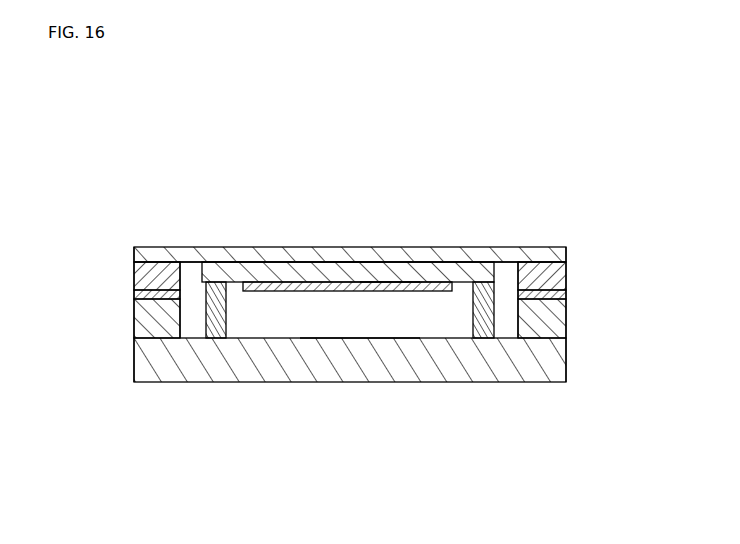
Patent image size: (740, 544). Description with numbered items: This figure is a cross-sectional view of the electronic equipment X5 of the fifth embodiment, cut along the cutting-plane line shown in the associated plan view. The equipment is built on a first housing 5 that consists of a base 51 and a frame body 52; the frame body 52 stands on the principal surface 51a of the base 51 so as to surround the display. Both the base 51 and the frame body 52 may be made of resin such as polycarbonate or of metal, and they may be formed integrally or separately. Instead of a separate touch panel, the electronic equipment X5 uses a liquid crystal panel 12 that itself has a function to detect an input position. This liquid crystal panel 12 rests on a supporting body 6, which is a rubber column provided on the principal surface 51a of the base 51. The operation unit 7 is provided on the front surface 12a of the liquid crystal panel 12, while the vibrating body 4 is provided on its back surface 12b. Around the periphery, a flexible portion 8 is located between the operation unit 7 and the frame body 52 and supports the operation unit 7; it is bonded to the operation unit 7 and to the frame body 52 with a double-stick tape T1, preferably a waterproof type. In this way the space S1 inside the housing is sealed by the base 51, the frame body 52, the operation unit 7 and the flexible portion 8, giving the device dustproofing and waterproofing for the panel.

The electronic equipment X5 is at (548, 86).
The vibrating body 4 is at (380, 289).
The first housing 5 is at (342, 406).
The supporting body 6 is at (224, 261).
The operation unit 7 is at (264, 249).
The flexible portion 8 is at (134, 288).
The liquid crystal panel 12 is at (318, 268).
The front surface 12a is at (358, 262).
The back surface 12b is at (389, 293).
The base 51 is at (203, 377).
The principal surface 51a is at (218, 325).
The frame body 52 is at (145, 317).
The space S1 is at (437, 300).
The double-stick tape T1 is at (135, 250).